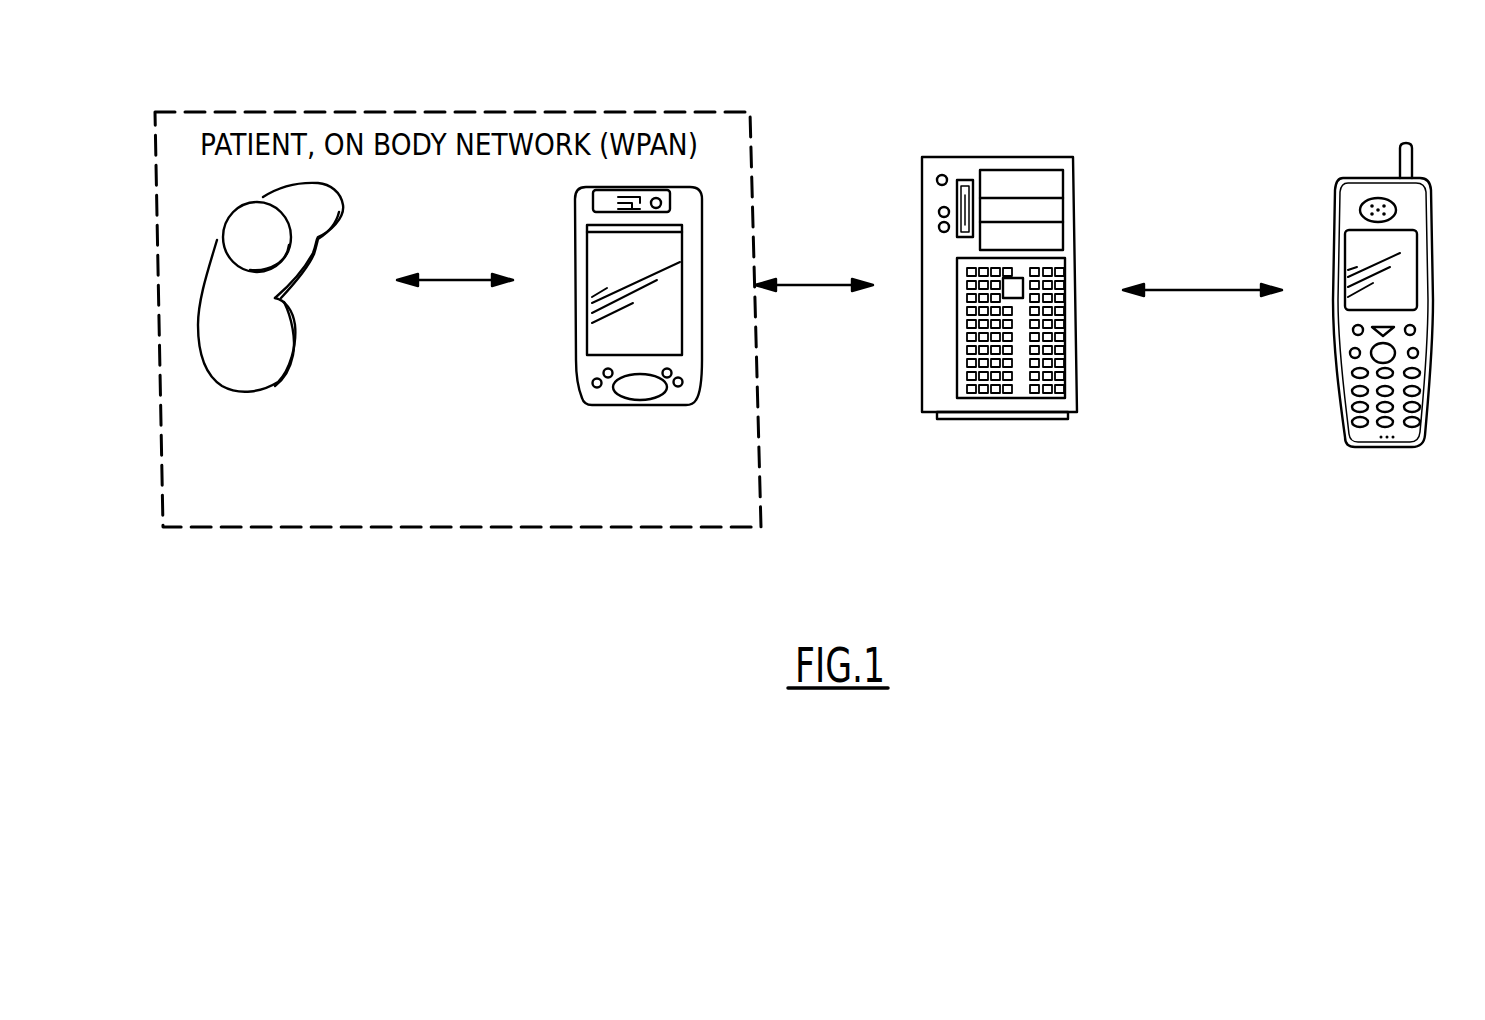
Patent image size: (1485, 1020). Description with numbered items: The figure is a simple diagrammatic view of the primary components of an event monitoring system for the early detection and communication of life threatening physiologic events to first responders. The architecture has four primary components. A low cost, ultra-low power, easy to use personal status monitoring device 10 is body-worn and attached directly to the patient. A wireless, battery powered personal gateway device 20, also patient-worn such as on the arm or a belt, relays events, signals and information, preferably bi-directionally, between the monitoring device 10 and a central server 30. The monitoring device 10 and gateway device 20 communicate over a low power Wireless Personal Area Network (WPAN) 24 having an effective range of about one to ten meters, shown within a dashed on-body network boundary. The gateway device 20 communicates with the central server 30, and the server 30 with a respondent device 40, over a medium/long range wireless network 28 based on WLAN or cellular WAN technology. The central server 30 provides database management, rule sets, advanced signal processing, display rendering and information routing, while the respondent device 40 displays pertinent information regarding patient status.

The personal status monitoring device 10 is at (250, 377).
The personal gateway device 20 is at (642, 392).
The Wireless Personal Area Network (WPAN) 24 is at (450, 282).
The medium/long range wireless network 28 is at (812, 285).
The central server 30 is at (1062, 420).
The respondent device 40 is at (1393, 448).